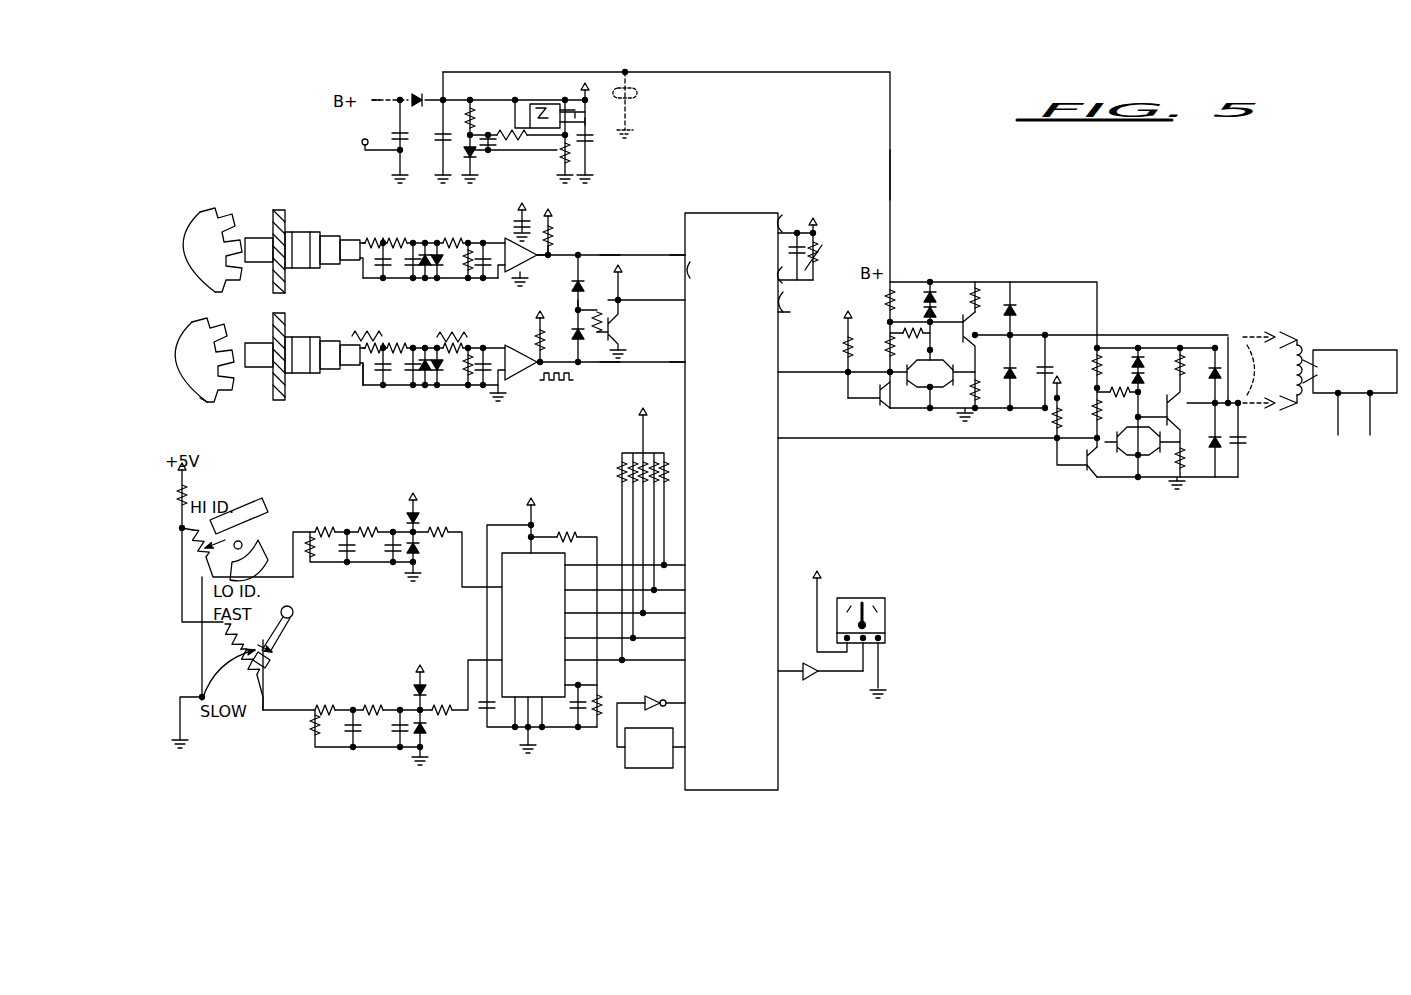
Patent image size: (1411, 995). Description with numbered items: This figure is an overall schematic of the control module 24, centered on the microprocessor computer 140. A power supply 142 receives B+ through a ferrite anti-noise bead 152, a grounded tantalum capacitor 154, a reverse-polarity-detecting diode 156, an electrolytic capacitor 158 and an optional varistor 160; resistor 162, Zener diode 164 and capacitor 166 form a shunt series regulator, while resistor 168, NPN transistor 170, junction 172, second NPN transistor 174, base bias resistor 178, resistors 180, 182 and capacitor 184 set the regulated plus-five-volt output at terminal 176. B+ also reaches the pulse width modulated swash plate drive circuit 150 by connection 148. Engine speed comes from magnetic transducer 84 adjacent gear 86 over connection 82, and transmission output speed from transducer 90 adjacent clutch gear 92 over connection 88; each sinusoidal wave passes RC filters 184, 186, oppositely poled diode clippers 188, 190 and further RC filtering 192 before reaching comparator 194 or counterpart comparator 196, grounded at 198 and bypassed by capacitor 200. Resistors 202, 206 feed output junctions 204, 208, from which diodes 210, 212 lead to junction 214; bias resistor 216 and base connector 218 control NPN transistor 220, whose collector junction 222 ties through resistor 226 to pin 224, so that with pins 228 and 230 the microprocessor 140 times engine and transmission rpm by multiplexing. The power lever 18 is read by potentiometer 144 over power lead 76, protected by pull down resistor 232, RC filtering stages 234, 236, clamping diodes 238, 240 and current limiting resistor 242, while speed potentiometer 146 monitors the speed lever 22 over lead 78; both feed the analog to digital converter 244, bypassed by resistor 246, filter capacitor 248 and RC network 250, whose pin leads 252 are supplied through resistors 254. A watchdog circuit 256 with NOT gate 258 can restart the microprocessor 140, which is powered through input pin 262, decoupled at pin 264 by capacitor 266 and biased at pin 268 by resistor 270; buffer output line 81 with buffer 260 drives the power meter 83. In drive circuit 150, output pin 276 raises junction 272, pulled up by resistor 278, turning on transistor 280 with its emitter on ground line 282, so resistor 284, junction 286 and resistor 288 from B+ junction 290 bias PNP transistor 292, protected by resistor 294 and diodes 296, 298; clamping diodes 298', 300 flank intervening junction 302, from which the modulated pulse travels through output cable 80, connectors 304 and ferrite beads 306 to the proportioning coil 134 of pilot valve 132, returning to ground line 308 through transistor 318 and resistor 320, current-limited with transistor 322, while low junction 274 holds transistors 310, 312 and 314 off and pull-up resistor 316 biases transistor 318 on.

The power lever 18 is at (253, 507).
The speed selector lever 22 is at (296, 612).
The control module 24 is at (328, 765).
The potentiometer power lead 76 is at (293, 532).
The speed signal line 78 is at (297, 708).
The output cable 80 is at (1215, 396).
The buffer output line 81 is at (786, 676).
The engine speed sensor 82 is at (355, 240).
The power meter 83 is at (887, 617).
The magnetic transducer 84 is at (278, 232).
The gear 86 is at (218, 245).
The transmission speed connection 88 is at (332, 340).
The magnetic transducer 90 is at (253, 330).
The clutch gear 92 is at (213, 402).
The swash plate pilot valve 132 is at (1350, 350).
The proportioning coil 134 is at (1302, 358).
The microprocessor computer 140 is at (740, 212).
The power supply 142 is at (408, 88).
The +5V potentiometer 144 is at (240, 507).
The speed potentiometer 146 is at (217, 662).
The connection 148 is at (892, 192).
The pulse width modulated swash plate drive circuit 150 is at (1172, 292).
The ferrite anti-noise bead 152 is at (350, 115).
The tantalum capacitor 154 is at (362, 140).
The reverse-polarity-detecting diode 156 is at (415, 95).
The electrolytic capacitor 158 is at (437, 140).
The varistor 160 is at (640, 95).
The resistor 162 is at (470, 112).
The Zener diode 164 is at (488, 150).
The capacitor 166 is at (521, 154).
The resistor 168 is at (513, 130).
The NPN transistor 170 is at (585, 130).
The junction 172 is at (582, 118).
The second NPN transistor 174 is at (548, 104).
The +5V linear voltage regulated terminal 176 is at (578, 70).
The base bias resistor 178 is at (578, 113).
The resistor 180 is at (592, 125).
The resistor 182 is at (568, 150).
The capacitor 184 is at (592, 140).
The RC filter 186 is at (410, 362).
The diode clipper 188 is at (427, 362).
The diode clipper 190 is at (440, 378).
The RC filtering 192 is at (468, 345).
The comparator 194 is at (502, 352).
The counterpart comparator 196 is at (508, 245).
The ground 198 is at (527, 268).
The capacitor 200 is at (532, 212).
The resistor 202 is at (576, 283).
The output junction 204 is at (540, 366).
The resistor 206 is at (550, 228).
The output junction 208 is at (550, 254).
The diode 210 is at (570, 391).
The diode 212 is at (580, 300).
The junction 214 is at (612, 253).
The bias resistor 216 is at (615, 364).
The base connector 218 is at (620, 300).
The NPN transistor 220 is at (618, 336).
The junction connection 222 is at (605, 322).
The pin 224 is at (690, 272).
The resistor 226 is at (615, 308).
The pin 228 is at (686, 254).
The pin 230 is at (686, 362).
The pull down resistor 232 is at (305, 555).
The RC filtering stage 234 is at (343, 532).
The RC filtering stage 236 is at (393, 540).
The clamping diode 238 is at (416, 500).
The clamping diode 240 is at (415, 550).
The current limiting resistor 242 is at (440, 532).
The analog to digital converter 244 is at (540, 553).
The resistor 246 is at (567, 537).
The filter capacitor 248 is at (485, 708).
The RC network 250 is at (582, 720).
The pin leads 252 is at (665, 638).
The resistors 254 is at (640, 480).
The watchdog circuit 256 is at (636, 770).
The NOT gate 258 is at (668, 710).
The buffer 260 is at (790, 667).
The input pin 262 is at (740, 214).
The pin 264 is at (801, 293).
The decoupling capacitor 266 is at (815, 240).
The pin 268 is at (801, 320).
The resistor 270 is at (806, 249).
The service connection junction 272 is at (848, 373).
The service connection junction 274 is at (1055, 440).
The output pin 276 is at (778, 373).
The pull-up resistor 278 is at (845, 352).
The transistor 280 is at (878, 398).
The ground line 282 is at (963, 412).
The resistor 284 is at (903, 375).
The junction 286 is at (960, 325).
The resistor 288 is at (931, 290).
The B+ junction 290 is at (892, 282).
The second transistor 292 is at (975, 283).
The resistor 294 is at (1010, 303).
The diode 296 is at (965, 317).
The diode 298 is at (975, 310).
The clamping diode 298' is at (1004, 403).
The clamping diode 300 is at (1022, 308).
The intervening junction 302 is at (1020, 336).
The cable connectors 304 is at (1348, 395).
The anti-noise ferrite beads 306 is at (1259, 370).
The ground line 308 is at (1185, 482).
The transistor 310 is at (1085, 466).
The transistor 312 is at (1110, 450).
The transistor 314 is at (1167, 395).
The pull-up resistor 316 is at (1112, 392).
The transistor 318 is at (1243, 441).
The resistor 320 is at (1190, 462).
The transistor 322 is at (1165, 450).